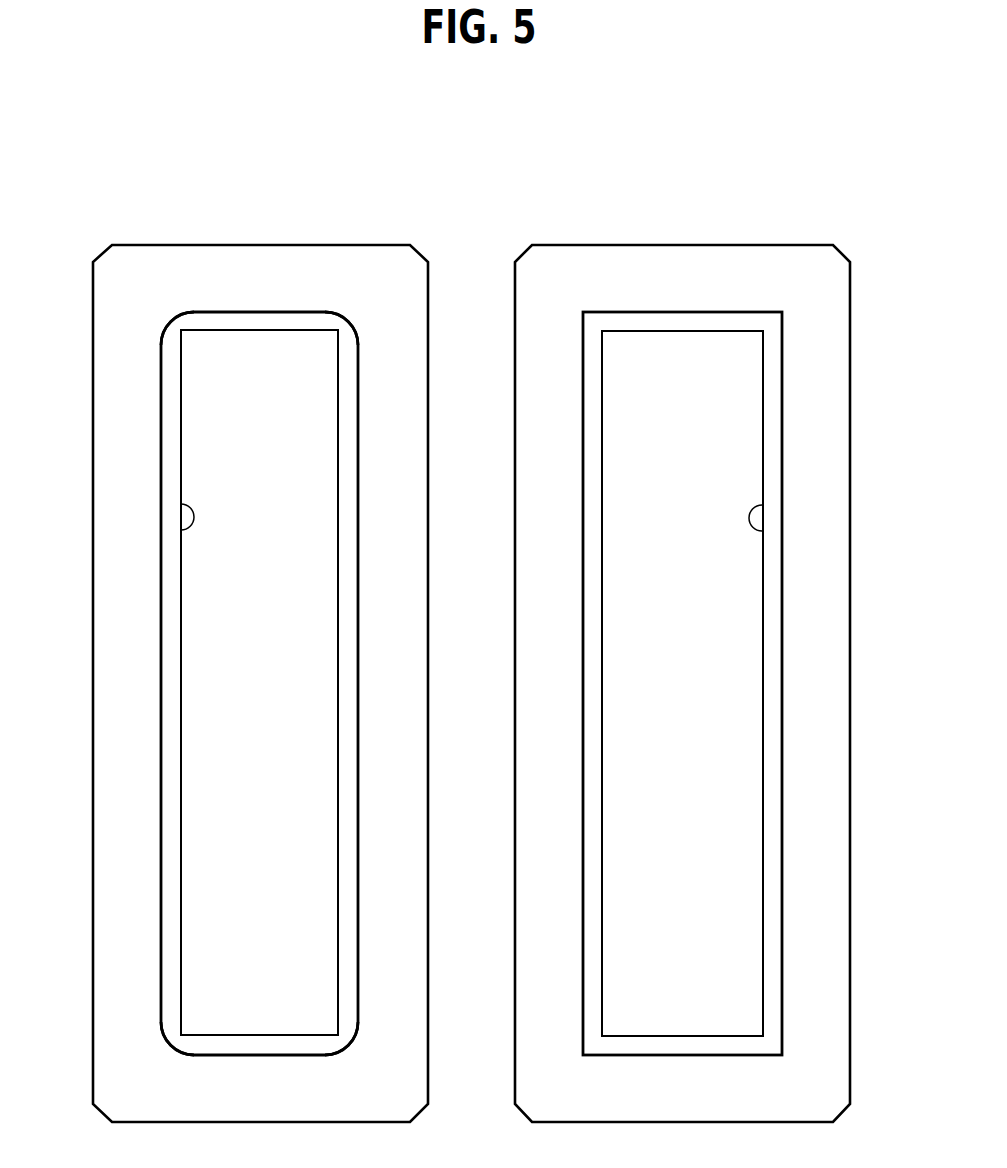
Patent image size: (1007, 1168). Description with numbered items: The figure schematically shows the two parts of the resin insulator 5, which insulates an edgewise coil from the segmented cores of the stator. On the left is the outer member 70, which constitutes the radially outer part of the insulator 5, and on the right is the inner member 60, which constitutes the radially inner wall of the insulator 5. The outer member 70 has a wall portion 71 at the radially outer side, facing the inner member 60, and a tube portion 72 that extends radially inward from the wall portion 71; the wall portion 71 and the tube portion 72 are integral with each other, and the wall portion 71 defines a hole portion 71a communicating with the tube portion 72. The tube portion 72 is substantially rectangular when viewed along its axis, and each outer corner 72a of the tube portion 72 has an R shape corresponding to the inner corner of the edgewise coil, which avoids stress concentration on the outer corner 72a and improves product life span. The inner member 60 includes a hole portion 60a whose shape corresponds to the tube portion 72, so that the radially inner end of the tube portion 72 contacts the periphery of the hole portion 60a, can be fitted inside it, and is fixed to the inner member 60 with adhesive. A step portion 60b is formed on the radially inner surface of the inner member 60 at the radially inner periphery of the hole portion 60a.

The insulator 5 is at (598, 170).
The outer member 70 is at (355, 245).
The wall portion 71 is at (118, 436).
The hole portion 71a is at (183, 533).
The tube portion 72 is at (172, 650).
The outer corner 72a is at (170, 330).
The inner member 60 is at (597, 245).
The hole portion 60a is at (768, 533).
The step portion 60b is at (770, 650).